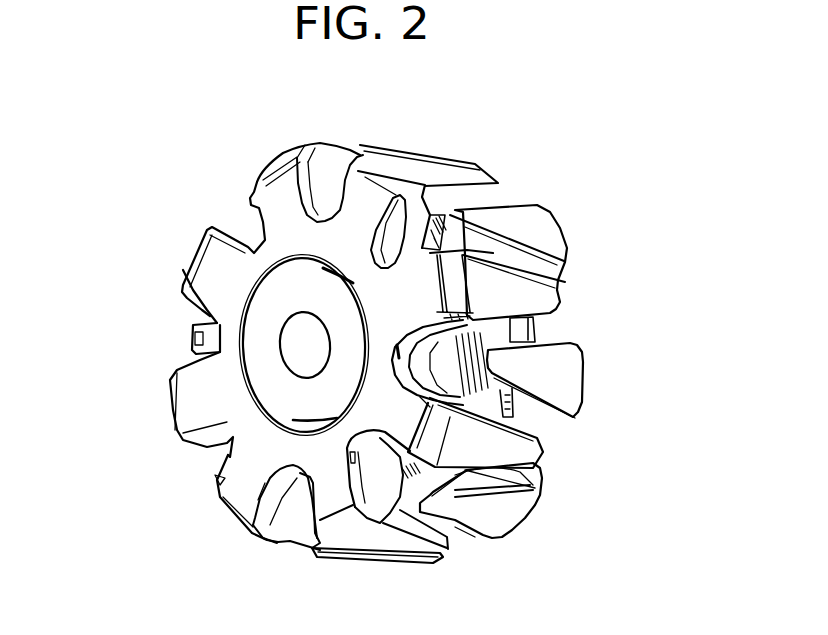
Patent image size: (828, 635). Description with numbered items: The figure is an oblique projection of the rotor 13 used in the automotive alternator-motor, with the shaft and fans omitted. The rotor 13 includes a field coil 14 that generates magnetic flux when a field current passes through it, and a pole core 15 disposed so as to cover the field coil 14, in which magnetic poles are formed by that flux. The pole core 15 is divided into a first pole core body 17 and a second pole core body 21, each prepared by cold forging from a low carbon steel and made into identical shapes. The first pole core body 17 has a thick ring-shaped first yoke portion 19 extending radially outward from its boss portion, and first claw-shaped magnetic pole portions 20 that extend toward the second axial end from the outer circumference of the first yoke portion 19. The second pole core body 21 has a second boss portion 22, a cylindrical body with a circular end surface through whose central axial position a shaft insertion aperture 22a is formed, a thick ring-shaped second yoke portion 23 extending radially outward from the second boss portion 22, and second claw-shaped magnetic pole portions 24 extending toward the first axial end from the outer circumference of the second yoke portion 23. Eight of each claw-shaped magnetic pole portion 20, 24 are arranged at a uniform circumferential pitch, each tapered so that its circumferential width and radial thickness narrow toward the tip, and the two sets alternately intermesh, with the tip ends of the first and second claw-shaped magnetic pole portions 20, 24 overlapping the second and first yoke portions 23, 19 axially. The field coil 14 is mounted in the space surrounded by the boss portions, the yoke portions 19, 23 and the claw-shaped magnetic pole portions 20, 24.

The rotor 13 is at (123, 100).
The field coil 14 is at (498, 337).
The pole core 15 is at (648, 170).
The first pole core body 17 is at (556, 225).
The first yoke portion 19 is at (522, 425).
The first claw-shaped magnetic pole portions 20 is at (566, 378).
The second pole core body 21 is at (515, 283).
The second boss portion 22 is at (262, 352).
The shaft insertion aperture 22a is at (292, 337).
The second yoke portion 23 is at (245, 422).
The second claw-shaped magnetic pole portions 24 is at (500, 443).